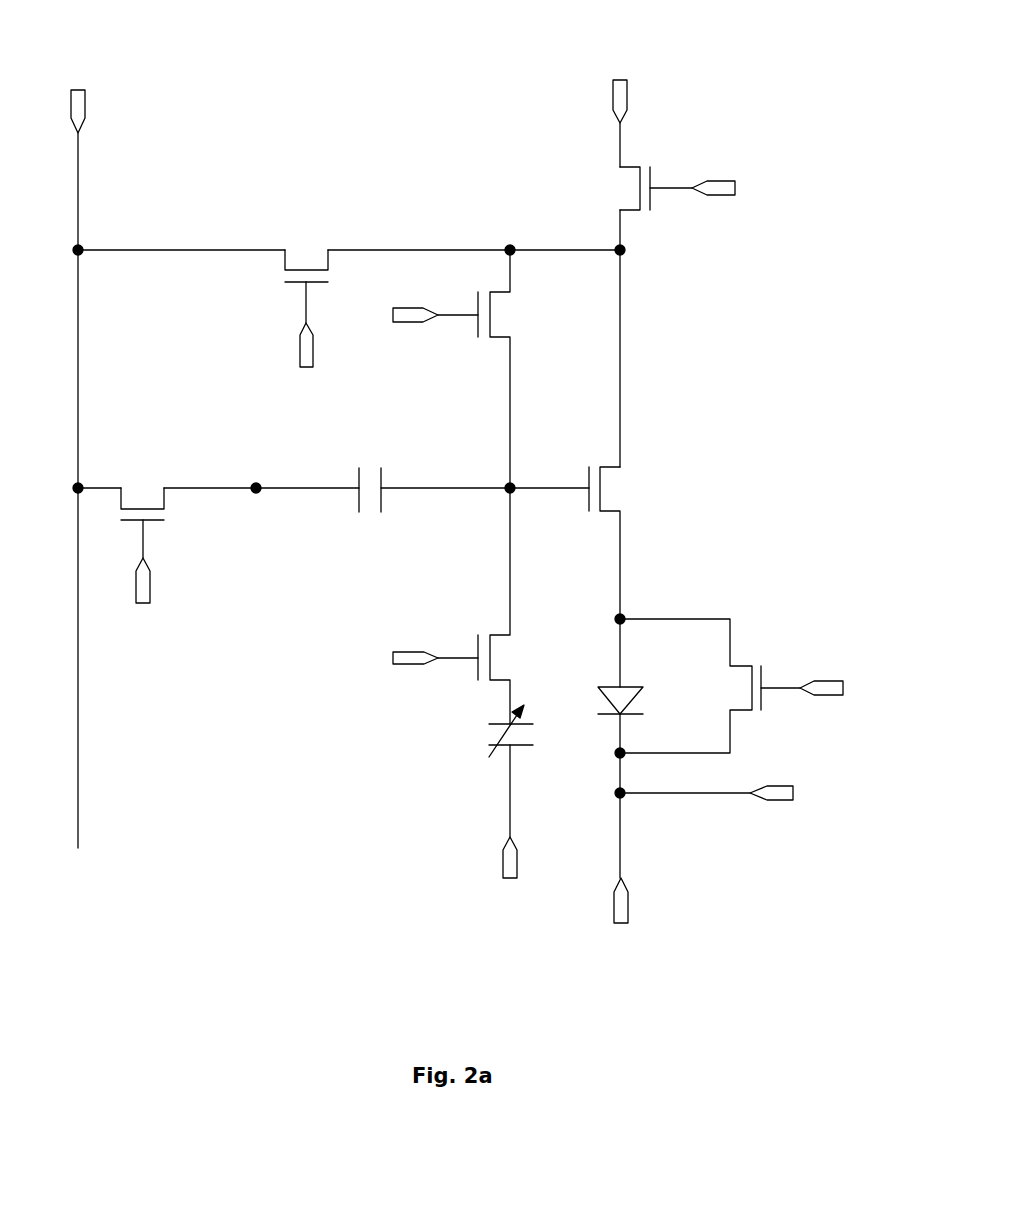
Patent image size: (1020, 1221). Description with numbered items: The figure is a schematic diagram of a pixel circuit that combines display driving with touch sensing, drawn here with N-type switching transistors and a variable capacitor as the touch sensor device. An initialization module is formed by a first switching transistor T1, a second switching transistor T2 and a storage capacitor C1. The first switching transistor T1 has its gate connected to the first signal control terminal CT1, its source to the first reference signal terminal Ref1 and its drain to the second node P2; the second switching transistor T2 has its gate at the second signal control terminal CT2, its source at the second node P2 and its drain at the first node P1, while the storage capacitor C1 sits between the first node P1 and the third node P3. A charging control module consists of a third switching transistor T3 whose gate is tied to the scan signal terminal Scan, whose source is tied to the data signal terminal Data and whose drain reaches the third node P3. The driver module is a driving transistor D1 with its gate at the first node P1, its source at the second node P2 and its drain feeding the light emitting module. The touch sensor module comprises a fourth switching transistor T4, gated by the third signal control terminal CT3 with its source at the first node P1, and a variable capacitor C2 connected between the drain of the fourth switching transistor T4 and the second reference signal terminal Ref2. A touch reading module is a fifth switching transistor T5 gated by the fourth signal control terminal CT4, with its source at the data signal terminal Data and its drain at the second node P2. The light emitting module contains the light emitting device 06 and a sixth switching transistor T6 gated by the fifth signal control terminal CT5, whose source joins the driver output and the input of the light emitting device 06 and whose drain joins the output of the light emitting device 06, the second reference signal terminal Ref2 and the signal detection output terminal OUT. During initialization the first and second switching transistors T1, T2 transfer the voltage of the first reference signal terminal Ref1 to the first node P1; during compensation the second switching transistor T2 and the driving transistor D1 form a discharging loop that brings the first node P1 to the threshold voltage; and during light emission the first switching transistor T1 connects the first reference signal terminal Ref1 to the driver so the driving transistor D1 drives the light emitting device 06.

The data signal terminal Data is at (80, 449).
The first reference signal terminal Ref1 is at (619, 111).
The second reference signal terminal Ref2 is at (563, 851).
The scan signal terminal Scan is at (147, 573).
The signal detection output terminal OUT is at (728, 796).
The first switching transistor T1 is at (621, 188).
The second switching transistor T2 is at (501, 369).
The third switching transistor T3 is at (142, 493).
The fourth switching transistor T4 is at (502, 606).
The fifth switching transistor T5 is at (306, 254).
The sixth switching transistor T6 is at (690, 686).
The driving transistor D1 is at (621, 543).
The storage capacitor C1 is at (374, 505).
The variable capacitor C2 is at (488, 731).
The light emitting device 06 is at (641, 689).
The first node P1 is at (501, 475).
The second node P2 is at (643, 251).
The third node P3 is at (258, 475).
The first signal control terminal CT1 is at (715, 189).
The second signal control terminal CT2 is at (415, 316).
The third signal control terminal CT3 is at (411, 658).
The fourth signal control terminal CT4 is at (311, 337).
The fifth signal control terminal CT5 is at (824, 690).